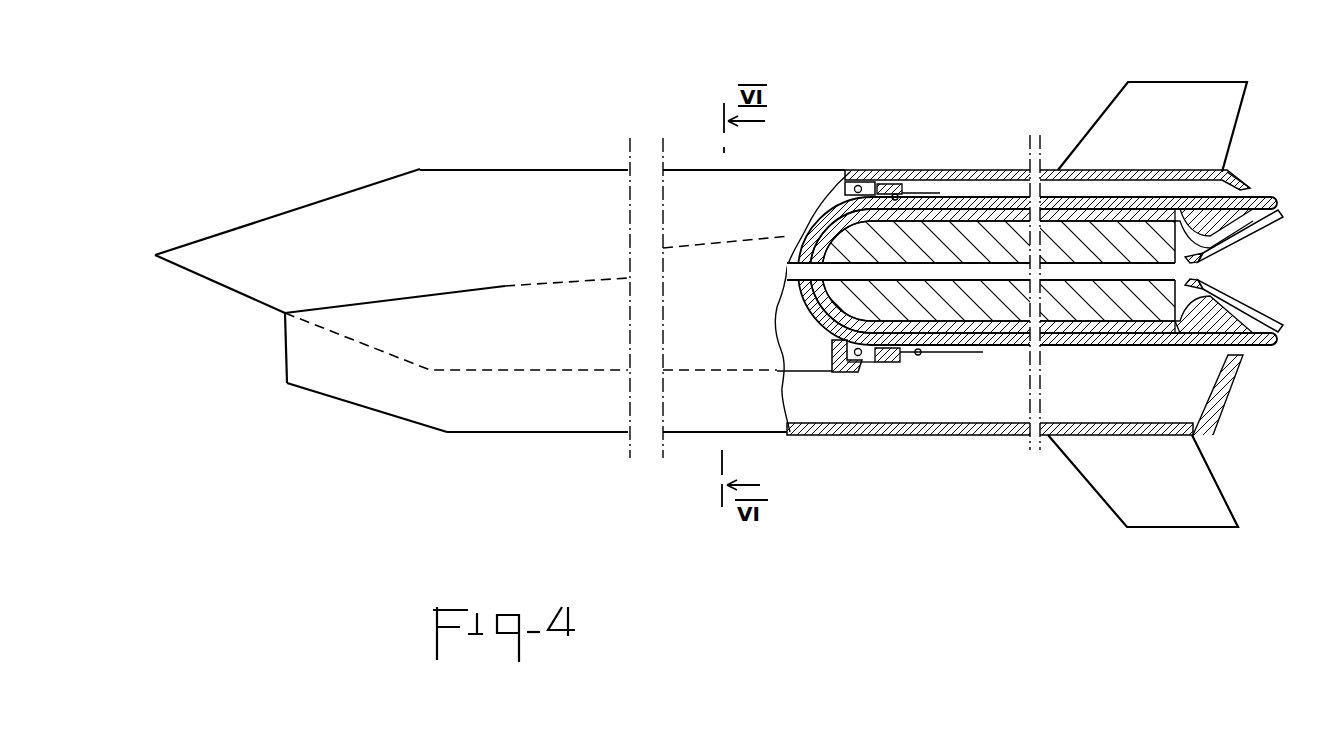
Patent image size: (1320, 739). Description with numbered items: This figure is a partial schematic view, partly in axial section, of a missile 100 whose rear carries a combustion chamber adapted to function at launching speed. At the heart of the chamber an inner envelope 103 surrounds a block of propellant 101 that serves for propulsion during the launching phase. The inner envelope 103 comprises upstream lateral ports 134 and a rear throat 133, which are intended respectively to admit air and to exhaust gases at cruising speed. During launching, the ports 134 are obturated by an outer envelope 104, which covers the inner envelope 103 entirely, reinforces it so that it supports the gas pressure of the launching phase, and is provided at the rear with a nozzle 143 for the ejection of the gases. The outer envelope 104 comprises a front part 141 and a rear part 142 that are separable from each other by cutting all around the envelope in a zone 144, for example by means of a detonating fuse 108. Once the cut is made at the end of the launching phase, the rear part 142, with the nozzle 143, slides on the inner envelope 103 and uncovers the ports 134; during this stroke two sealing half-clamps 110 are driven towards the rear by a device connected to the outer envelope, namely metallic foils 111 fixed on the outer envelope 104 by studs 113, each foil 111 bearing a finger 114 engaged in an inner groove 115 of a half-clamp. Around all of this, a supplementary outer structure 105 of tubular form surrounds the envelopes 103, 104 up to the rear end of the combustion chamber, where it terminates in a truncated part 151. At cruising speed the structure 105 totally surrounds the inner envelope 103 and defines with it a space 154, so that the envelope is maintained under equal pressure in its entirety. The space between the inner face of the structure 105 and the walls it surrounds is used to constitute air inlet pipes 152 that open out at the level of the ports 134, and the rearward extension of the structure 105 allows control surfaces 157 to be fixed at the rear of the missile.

The missile 100 is at (548, 183).
The block of propellant 101 is at (1003, 258).
The inner envelope 103 is at (976, 208).
The outer envelope 104 is at (945, 219).
The supplementary outer structure 105 is at (1126, 172).
The detonating fuse 108 is at (857, 185).
The sealing half-clamps 110 is at (895, 194).
The metallic foils 111 is at (980, 355).
The studs 113 is at (918, 356).
The finger 114 is at (897, 364).
The inner groove 115 is at (918, 192).
The rear throat 133 is at (1220, 228).
The upstream lateral ports 134 is at (1003, 352).
The front part 141 is at (833, 337).
The rear part 142 is at (1148, 347).
The nozzle 143 is at (1202, 283).
The cutting zone 144 is at (880, 185).
The truncated part 151 is at (1241, 180).
The air inlet pipes 152 is at (274, 371).
The space 154 is at (1132, 426).
The control surfaces 157 is at (1208, 93).